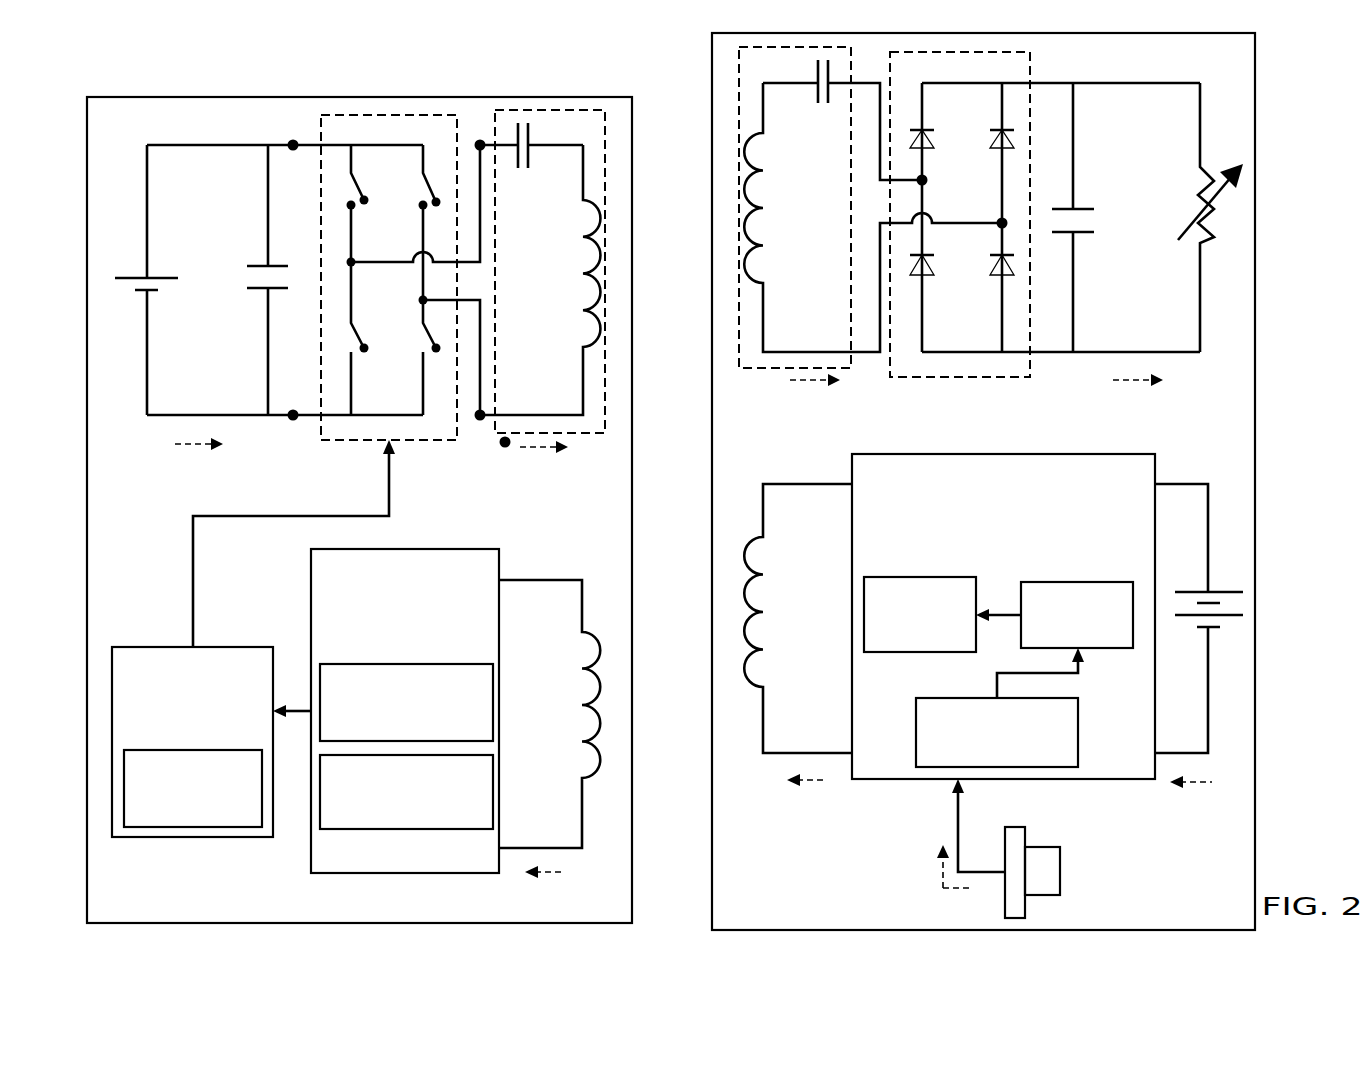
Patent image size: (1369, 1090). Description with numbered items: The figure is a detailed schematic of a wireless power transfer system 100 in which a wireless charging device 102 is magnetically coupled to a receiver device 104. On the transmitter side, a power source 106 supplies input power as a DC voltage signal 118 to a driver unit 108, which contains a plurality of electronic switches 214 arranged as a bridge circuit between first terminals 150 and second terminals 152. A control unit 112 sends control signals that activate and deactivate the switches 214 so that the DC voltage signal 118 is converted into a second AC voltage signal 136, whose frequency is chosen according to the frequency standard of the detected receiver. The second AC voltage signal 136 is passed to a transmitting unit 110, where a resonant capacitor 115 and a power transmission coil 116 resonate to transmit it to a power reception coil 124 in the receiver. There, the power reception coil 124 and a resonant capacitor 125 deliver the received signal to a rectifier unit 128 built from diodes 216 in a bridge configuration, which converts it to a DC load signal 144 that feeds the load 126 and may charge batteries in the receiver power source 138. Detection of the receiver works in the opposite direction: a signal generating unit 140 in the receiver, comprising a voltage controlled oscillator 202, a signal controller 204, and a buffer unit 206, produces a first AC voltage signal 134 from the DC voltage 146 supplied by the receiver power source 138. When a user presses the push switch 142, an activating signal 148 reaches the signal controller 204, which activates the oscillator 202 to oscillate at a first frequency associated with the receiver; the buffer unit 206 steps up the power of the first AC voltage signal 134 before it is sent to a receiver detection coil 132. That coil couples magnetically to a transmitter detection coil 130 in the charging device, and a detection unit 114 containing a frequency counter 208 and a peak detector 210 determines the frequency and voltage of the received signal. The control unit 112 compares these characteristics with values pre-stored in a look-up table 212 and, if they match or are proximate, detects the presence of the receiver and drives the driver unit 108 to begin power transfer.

The wireless power transfer system 100 is at (1272, 60).
The wireless charging device 102 is at (158, 97).
The receiver device 104 is at (712, 68).
The power source 106 is at (126, 267).
The driver unit 108 is at (394, 114).
The transmitting unit 110 is at (520, 114).
The control unit 112 is at (158, 647).
The detection unit 114 is at (410, 548).
The resonant capacitor 115 is at (530, 112).
The power transmission coil 116 is at (585, 283).
The DC voltage signal 118 is at (189, 449).
The power reception coil 124 is at (758, 237).
The resonant capacitor 125 is at (818, 101).
The load 126 is at (1208, 238).
The rectifier unit 128 is at (1030, 68).
The transmitter detection coil 130 is at (585, 733).
The receiver detection coil 132 is at (758, 590).
The first AC voltage signal 134 is at (553, 876).
The second AC voltage signal 136 is at (540, 451).
The receiver power source 138 is at (1246, 587).
The signal generating unit 140 is at (915, 454).
The push switch/button 142 is at (1063, 870).
The DC load signal 144 is at (1133, 383).
The DC voltage 146 is at (1195, 788).
The activating signal 148 is at (940, 876).
The first terminals 150 is at (292, 140).
The second terminals 152 is at (480, 140).
The voltage controlled oscillator 202 is at (1100, 582).
The signal controller 204 is at (1078, 738).
The buffer unit 206 is at (920, 577).
The frequency counter 208 is at (320, 666).
The peak detector 210 is at (337, 832).
The look-up table 212 is at (140, 830).
The electronic switches 214 is at (430, 180).
The diodes 216 is at (990, 143).